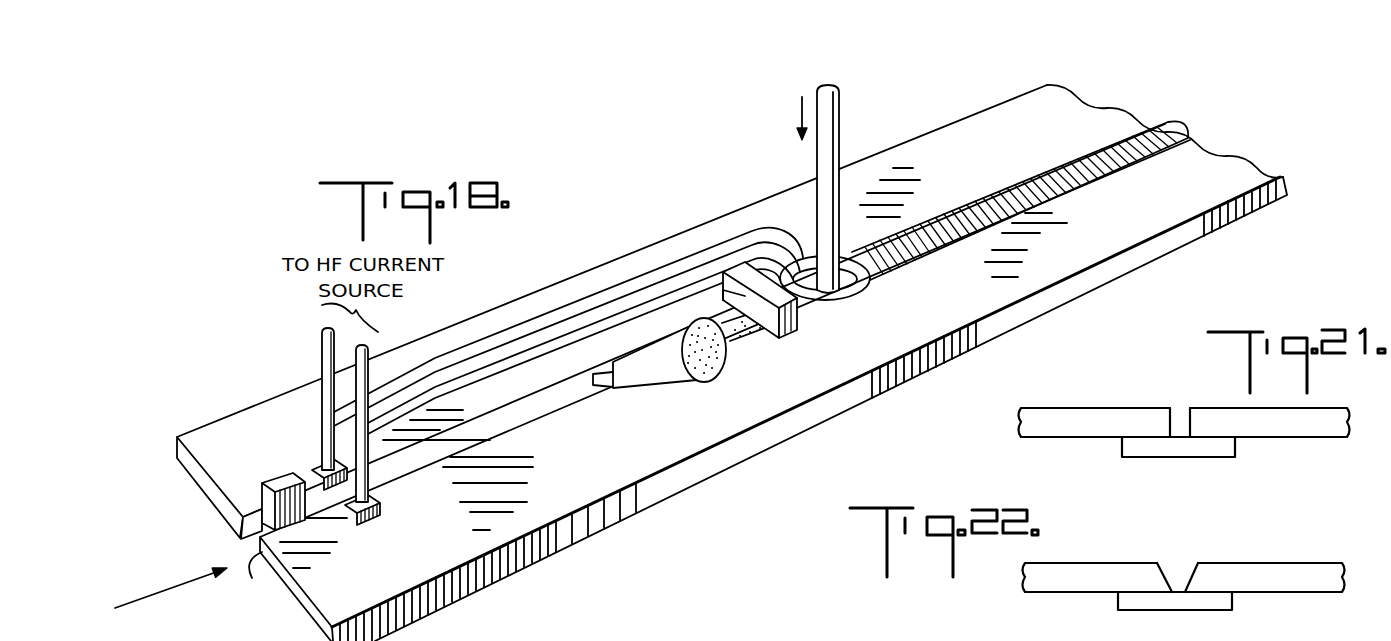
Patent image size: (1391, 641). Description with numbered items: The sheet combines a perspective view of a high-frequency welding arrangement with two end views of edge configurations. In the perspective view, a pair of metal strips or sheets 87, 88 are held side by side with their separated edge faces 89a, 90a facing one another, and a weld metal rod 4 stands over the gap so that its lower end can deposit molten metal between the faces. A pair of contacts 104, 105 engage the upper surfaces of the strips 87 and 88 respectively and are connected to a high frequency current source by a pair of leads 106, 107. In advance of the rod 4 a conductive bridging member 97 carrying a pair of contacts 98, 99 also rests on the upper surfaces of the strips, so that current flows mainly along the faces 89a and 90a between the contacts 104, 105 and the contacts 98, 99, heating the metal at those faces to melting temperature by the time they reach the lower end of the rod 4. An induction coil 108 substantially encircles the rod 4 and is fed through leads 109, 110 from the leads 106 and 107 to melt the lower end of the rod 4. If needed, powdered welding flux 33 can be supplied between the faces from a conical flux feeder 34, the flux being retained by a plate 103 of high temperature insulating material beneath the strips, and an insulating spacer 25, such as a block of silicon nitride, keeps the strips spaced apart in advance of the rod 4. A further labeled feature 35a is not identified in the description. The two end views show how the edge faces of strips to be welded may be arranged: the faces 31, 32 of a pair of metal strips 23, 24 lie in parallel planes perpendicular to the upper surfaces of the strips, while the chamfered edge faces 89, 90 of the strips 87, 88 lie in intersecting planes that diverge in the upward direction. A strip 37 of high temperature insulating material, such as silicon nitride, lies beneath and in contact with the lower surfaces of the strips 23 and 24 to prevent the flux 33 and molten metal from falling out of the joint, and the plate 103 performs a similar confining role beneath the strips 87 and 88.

In FIG. 19, the weld metal rod 4 is at (840, 122).
In FIG. 21, the metal strip 23 is at (1080, 411).
In FIG. 21, the metal strip 24 is at (1272, 411).
In FIG. 19, the insulating spacer 25 is at (283, 482).
In FIG. 21, the face 31 is at (1178, 408).
In FIG. 21, the face 32 is at (1191, 408).
In FIG. 19, the welding flux 33 is at (726, 368).
In FIG. 19, the conical feeder 34 is at (667, 383).
In FIG. 19, the weld seam 35a is at (1033, 176).
In FIG. 21, the strip of high temperature insulating material 37 is at (1133, 448).
In FIG. 19, the metal strip 87 is at (242, 469).
In FIG. 22, the metal strip 87 is at (1088, 572).
In FIG. 19, the metal strip 88 is at (773, 390).
In FIG. 22, the metal strip 88 is at (1285, 568).
In FIG. 22, the edge face 89 is at (1167, 561).
In FIG. 22, the edge face 90 is at (1197, 563).
In FIG. 19, the face 89a is at (242, 537).
In FIG. 19, the face 90a is at (242, 584).
In FIG. 19, the bridging member 97 is at (798, 321).
In FIG. 19, the contact 98 is at (788, 336).
In FIG. 19, the contact 99 is at (723, 297).
In FIG. 22, the plate of high temperature insulating material 103 is at (1153, 603).
In FIG. 19, the contact 104 is at (314, 465).
In FIG. 19, the contact 105 is at (381, 507).
In FIG. 19, the lead 106 is at (322, 350).
In FIG. 19, the lead 107 is at (380, 358).
In FIG. 19, the induction coil 108 is at (886, 285).
In FIG. 19, the lead 109 is at (561, 308).
In FIG. 19, the lead 110 is at (565, 338).